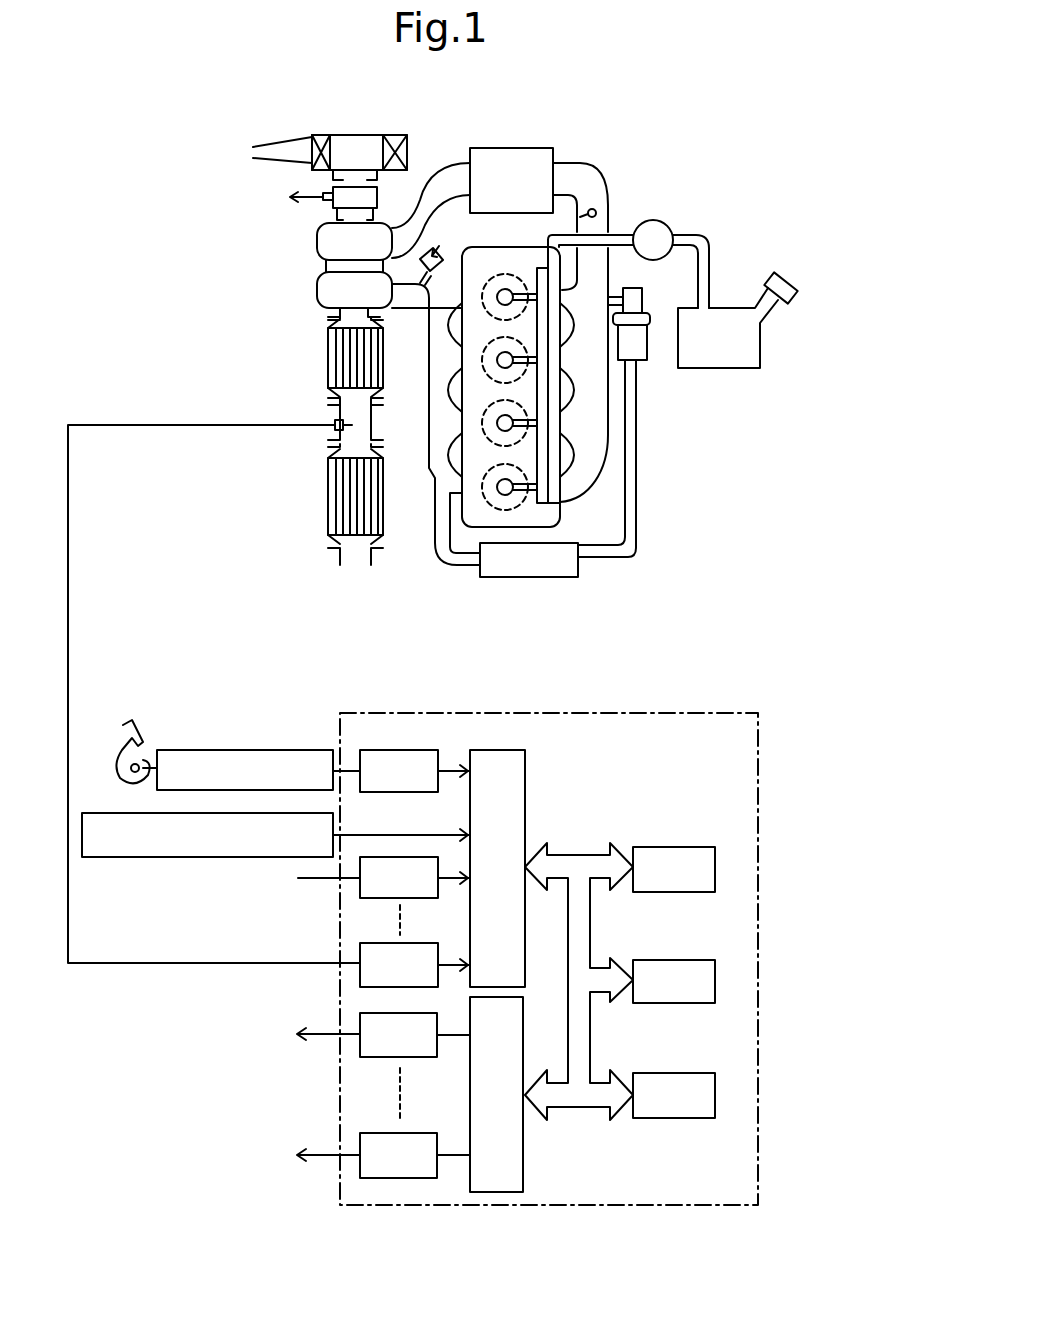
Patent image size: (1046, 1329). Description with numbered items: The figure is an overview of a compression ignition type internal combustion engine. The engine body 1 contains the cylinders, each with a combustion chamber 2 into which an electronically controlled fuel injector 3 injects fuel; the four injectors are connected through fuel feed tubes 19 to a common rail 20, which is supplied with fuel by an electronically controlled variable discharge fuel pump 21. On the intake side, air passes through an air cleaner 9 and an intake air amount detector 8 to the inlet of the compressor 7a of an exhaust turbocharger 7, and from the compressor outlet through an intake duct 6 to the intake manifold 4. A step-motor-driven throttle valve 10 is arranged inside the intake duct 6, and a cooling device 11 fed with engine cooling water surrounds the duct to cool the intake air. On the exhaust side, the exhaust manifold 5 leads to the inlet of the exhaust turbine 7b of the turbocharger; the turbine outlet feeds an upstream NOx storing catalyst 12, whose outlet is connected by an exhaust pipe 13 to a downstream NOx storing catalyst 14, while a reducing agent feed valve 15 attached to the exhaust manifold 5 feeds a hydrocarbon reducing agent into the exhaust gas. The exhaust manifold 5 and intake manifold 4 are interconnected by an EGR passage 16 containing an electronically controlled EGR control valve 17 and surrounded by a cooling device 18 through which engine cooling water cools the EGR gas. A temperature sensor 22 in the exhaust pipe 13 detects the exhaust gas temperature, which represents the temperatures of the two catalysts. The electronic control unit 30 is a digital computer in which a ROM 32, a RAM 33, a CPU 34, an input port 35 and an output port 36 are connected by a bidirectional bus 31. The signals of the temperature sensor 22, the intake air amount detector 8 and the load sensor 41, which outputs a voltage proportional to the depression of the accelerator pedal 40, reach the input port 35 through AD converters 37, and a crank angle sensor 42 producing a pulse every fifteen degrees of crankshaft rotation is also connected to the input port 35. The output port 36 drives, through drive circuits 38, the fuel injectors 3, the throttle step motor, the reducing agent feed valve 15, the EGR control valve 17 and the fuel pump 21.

The engine body 1 is at (561, 527).
The combustion chamber 2 is at (492, 284).
The electronically controlled fuel injector 3 is at (505, 288).
The intake manifold 4 is at (600, 467).
The exhaust manifold 5 is at (434, 468).
The intake duct 6 is at (590, 178).
The exhaust turbocharger 7 is at (317, 268).
The compressor 7a is at (312, 237).
The exhaust turbine 7b is at (315, 290).
The intake air amount detector 8 is at (333, 205).
The air cleaner 9 is at (358, 144).
The throttle valve 10 is at (600, 207).
The cooling device 11 is at (531, 160).
The upstream NOx storing catalyst 12 is at (338, 358).
The exhaust pipe 13 is at (362, 417).
The downstream NOx storing catalyst 14 is at (335, 493).
The reducing agent feed valve 15 is at (438, 272).
The EGR passage 16 is at (641, 440).
The EGR control valve 17 is at (640, 303).
The cooling device 18 is at (545, 568).
The fuel feed tube 19 is at (518, 290).
The common rail 20 is at (527, 425).
The variable discharge fuel pump 21 is at (668, 225).
The temperature sensor 22 is at (327, 430).
The electronic control unit 30 is at (760, 787).
The bidirectional bus 31 is at (578, 862).
The read only memory (ROM) 32 is at (680, 847).
The random access memory (RAM) 33 is at (684, 960).
The microprocessor (CPU) 34 is at (684, 1073).
The input port 35 is at (508, 750).
The output port 36 is at (525, 1178).
The AD converter 37 is at (410, 750).
The drive circuit 38 is at (360, 1143).
The accelerator pedal 40 is at (128, 733).
The load sensor 41 is at (273, 750).
The crank angle sensor 42 is at (193, 857).